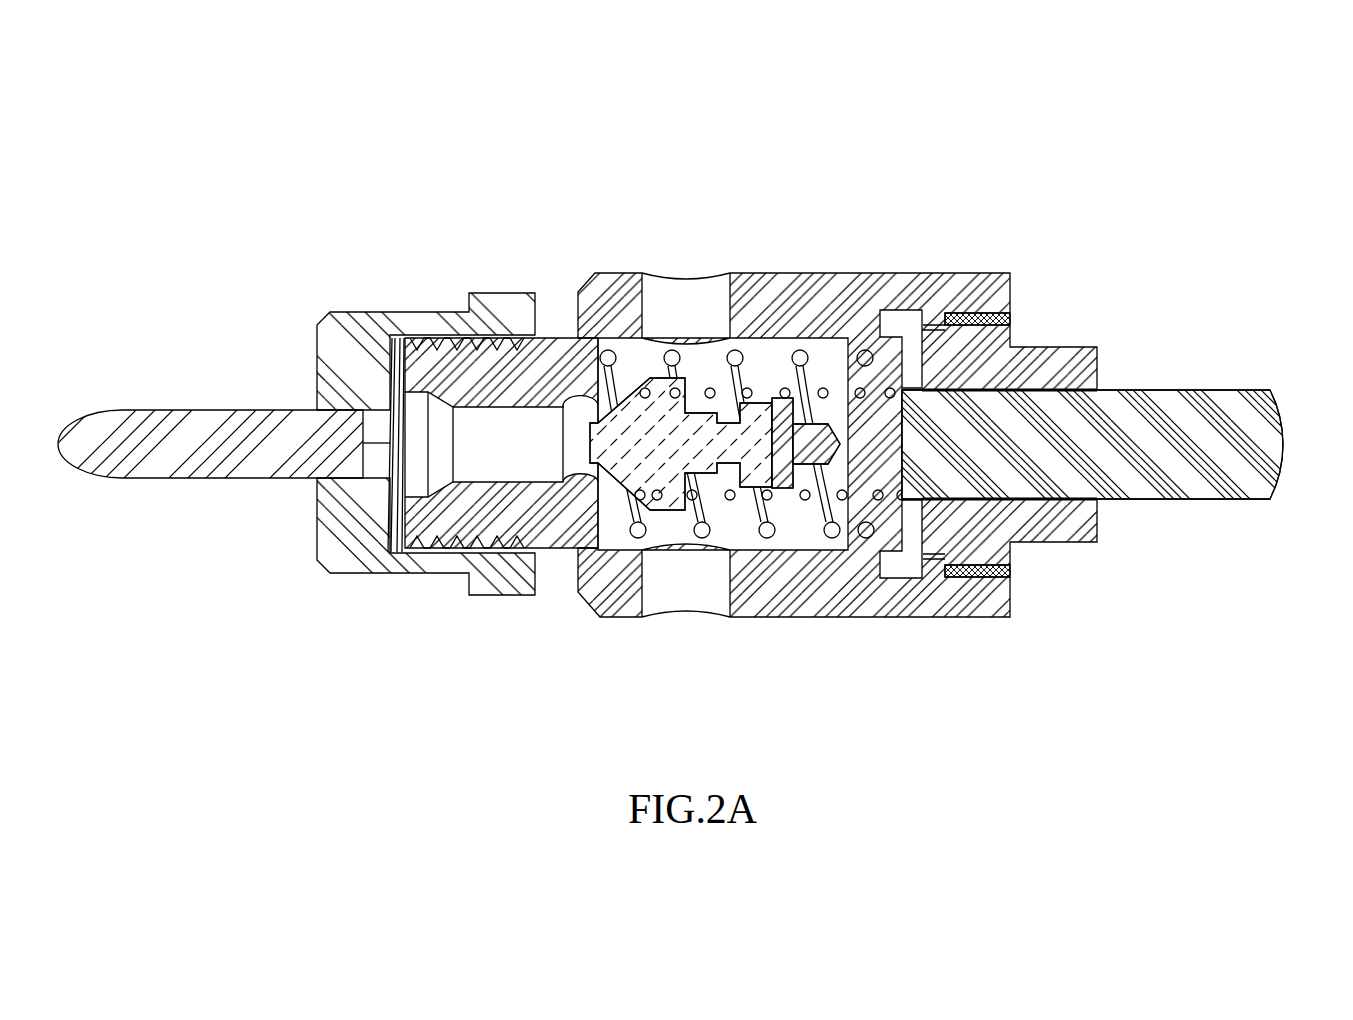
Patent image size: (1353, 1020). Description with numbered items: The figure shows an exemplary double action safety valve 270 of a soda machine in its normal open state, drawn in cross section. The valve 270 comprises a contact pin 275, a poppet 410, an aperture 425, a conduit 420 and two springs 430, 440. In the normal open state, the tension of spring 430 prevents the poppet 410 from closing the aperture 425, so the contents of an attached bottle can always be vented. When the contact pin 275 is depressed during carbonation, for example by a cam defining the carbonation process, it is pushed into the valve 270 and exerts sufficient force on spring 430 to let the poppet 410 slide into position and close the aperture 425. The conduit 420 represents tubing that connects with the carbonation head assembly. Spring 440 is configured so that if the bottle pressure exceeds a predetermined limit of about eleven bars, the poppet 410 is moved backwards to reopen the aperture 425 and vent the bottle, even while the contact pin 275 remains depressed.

The double action safety valve 270 is at (1042, 153).
The contact pin 275 is at (1202, 412).
The poppet 410 is at (578, 556).
The conduit 420 is at (482, 445).
The aperture 425 is at (563, 445).
The spring 430 is at (668, 348).
The spring 440 is at (802, 500).